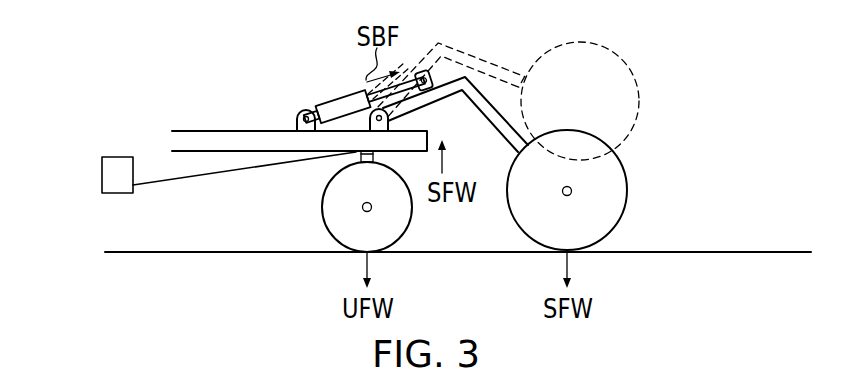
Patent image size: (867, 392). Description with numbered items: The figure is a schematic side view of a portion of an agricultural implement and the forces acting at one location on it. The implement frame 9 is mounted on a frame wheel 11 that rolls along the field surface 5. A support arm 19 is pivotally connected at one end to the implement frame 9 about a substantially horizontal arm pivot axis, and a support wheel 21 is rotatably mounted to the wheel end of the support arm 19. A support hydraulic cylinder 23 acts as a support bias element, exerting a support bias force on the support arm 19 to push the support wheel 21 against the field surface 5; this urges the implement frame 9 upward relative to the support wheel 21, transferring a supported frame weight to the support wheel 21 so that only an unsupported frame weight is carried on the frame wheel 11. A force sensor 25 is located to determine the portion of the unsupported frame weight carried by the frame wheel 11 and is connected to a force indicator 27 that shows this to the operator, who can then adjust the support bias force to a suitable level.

The field surface 5 is at (763, 252).
The implement frame 9 is at (208, 131).
The frame wheel 11 is at (325, 222).
The support arm 19 is at (500, 112).
The support wheel 21 is at (626, 172).
The support hydraulic cylinder 23 is at (334, 100).
The force sensor 25 is at (356, 154).
The force indicator 27 is at (118, 157).